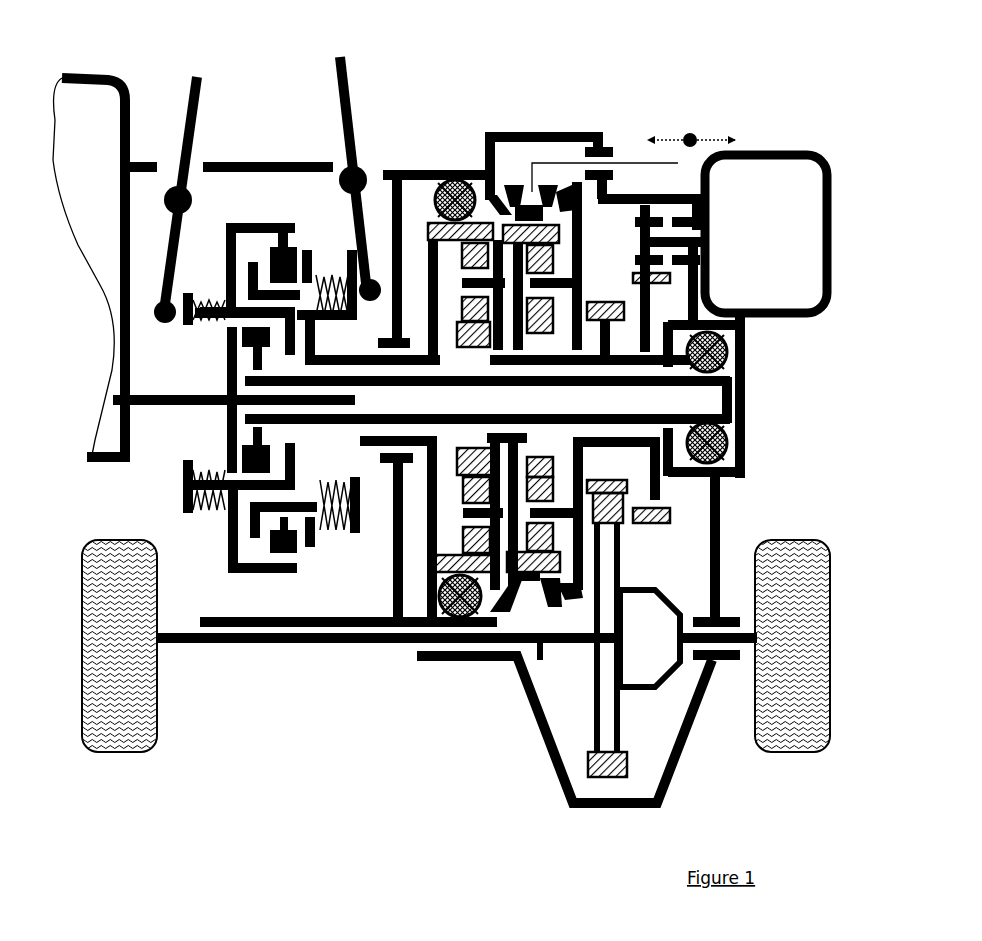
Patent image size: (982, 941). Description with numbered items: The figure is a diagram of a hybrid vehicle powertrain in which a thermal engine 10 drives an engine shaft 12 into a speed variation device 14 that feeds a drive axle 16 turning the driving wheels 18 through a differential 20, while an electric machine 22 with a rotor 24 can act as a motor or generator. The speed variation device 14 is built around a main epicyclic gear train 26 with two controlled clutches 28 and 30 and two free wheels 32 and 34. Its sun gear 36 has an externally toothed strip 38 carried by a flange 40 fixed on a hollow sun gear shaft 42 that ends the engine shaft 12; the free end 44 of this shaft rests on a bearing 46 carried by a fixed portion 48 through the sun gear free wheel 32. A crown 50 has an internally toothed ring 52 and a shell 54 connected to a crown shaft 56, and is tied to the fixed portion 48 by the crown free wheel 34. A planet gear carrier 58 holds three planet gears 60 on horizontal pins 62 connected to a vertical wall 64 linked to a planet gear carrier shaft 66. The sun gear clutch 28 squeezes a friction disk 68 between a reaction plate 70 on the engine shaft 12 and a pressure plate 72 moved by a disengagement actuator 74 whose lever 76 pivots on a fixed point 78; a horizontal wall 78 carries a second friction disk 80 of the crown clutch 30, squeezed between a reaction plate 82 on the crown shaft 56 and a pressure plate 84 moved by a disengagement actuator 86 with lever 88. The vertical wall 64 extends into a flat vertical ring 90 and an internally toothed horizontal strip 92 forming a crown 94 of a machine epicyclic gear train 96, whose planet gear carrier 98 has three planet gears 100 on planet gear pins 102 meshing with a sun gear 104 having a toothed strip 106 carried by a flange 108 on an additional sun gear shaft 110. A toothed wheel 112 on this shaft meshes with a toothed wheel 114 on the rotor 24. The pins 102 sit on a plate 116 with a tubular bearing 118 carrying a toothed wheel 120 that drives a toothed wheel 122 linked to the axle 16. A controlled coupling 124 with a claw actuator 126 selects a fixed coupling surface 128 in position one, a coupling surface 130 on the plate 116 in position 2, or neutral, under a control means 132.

The thermal engine 10 is at (100, 95).
The engine shaft 12 is at (145, 395).
The speed variation device 14 is at (370, 630).
The drive axle 16 is at (178, 650).
The driving wheels 18 is at (135, 735).
The differential 20 is at (650, 638).
The electric machine 22 is at (766, 234).
The rotor 24 is at (710, 248).
The main epicyclic gear train 26 is at (365, 505).
The sun gear clutch 28 is at (245, 445).
The crown clutch 30 is at (265, 250).
The sun gear free wheel 32 is at (735, 348).
The crown free wheel 34 is at (448, 178).
The sun gear 36 is at (450, 380).
The externally toothed strip 38 is at (455, 465).
The flange 40 is at (470, 418).
The sun gear shaft 42 is at (700, 396).
The free end 44 is at (745, 418).
The bearing 46 is at (750, 478).
The fixed portion 48 is at (710, 600).
The crown 50 is at (420, 200).
The internally toothed ring 52 is at (425, 628).
The shell 54 is at (415, 525).
The crown shaft 56 is at (410, 468).
The planet gear carrier 58 is at (450, 290).
The planet gears 60 is at (460, 265).
The horizontal pin 62 is at (460, 282).
The vertical wall 64 is at (495, 440).
The planet gear carrier shaft 66 is at (505, 440).
The friction disk 68 is at (262, 345).
The reaction plate 70 is at (228, 375).
The pressure plate 72 is at (295, 328).
The disengagement actuator 74 is at (175, 135).
The lever 76 is at (190, 160).
The horizontal wall 78 is at (285, 240).
The friction disk 80 is at (282, 548).
The reaction plate 82 is at (312, 550).
The pressure plate 84 is at (230, 540).
The disengagement actuator 86 is at (338, 160).
The lever 88 is at (353, 110).
The flat vertical ring 90 is at (505, 520).
The internally toothed horizontal strip 92 is at (560, 598).
The crown 94 is at (520, 598).
The machine epicyclic gear train 96 is at (555, 325).
The planet gear carrier 98 is at (560, 275).
The planet gears 100 is at (560, 240).
The planet gear pins 102 is at (600, 522).
The sun gear 104 is at (548, 455).
The externally toothed strip 106 is at (590, 445).
The flange 108 is at (540, 455).
The additional sun gear shaft 110 is at (600, 352).
The toothed wheel 112 is at (672, 515).
The toothed wheel 114 is at (700, 205).
The plate 116 is at (570, 565).
The tubular bearing 118 is at (600, 478).
The toothed wheel 120 is at (645, 320).
The toothed wheel 122 is at (630, 765).
The controlled coupling 124 is at (550, 640).
The claw actuator 126 is at (525, 668).
The fixed coupling surface 128 is at (500, 175).
The coupling surface 130 is at (570, 188).
The control means 132 is at (640, 165).
The meshing position 2 is at (692, 126).